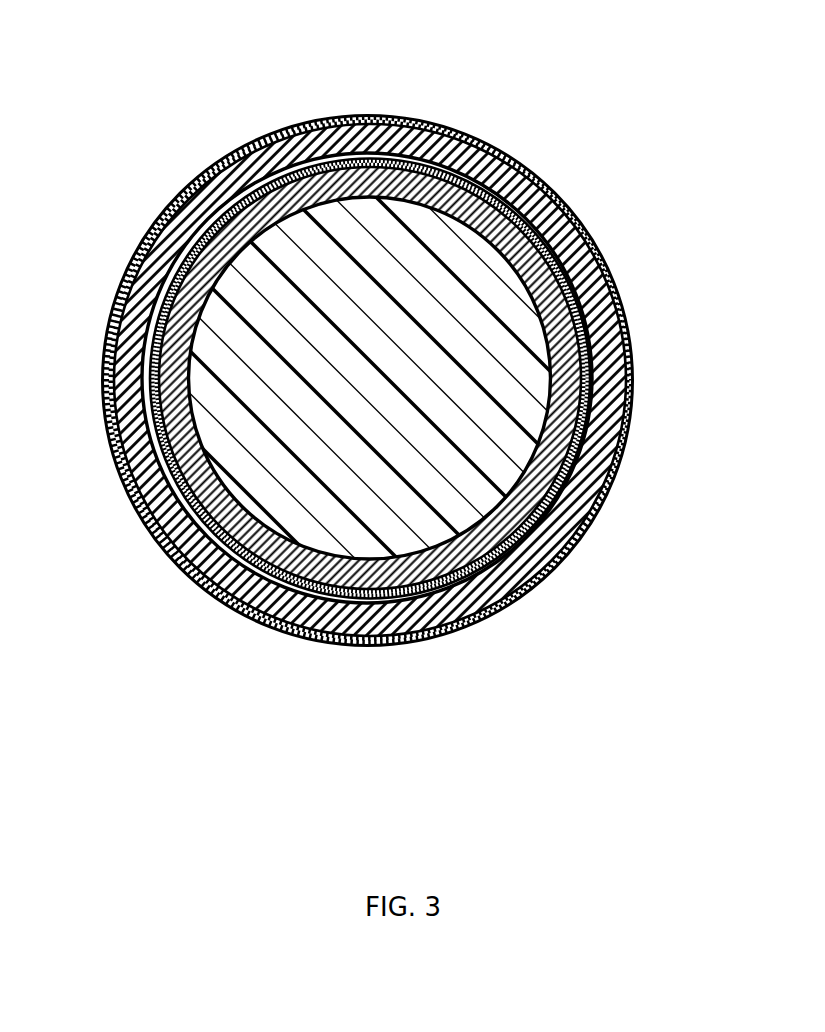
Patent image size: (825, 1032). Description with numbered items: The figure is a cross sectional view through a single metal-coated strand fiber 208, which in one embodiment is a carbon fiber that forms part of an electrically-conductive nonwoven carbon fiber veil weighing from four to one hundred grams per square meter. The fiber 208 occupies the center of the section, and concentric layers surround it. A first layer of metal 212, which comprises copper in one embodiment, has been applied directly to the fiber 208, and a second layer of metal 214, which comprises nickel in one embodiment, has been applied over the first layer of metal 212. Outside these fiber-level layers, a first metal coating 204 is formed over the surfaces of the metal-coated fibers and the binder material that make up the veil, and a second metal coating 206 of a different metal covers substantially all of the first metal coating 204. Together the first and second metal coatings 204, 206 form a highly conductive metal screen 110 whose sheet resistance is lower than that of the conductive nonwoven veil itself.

The highly conductive metal screen 110 is at (625, 647).
The first metal coating 204 is at (537, 183).
The second metal coating 206 is at (502, 148).
The metal-coated strand fiber 208 is at (383, 228).
The first layer of metal 212 is at (603, 263).
The second layer of metal 214 is at (630, 322).